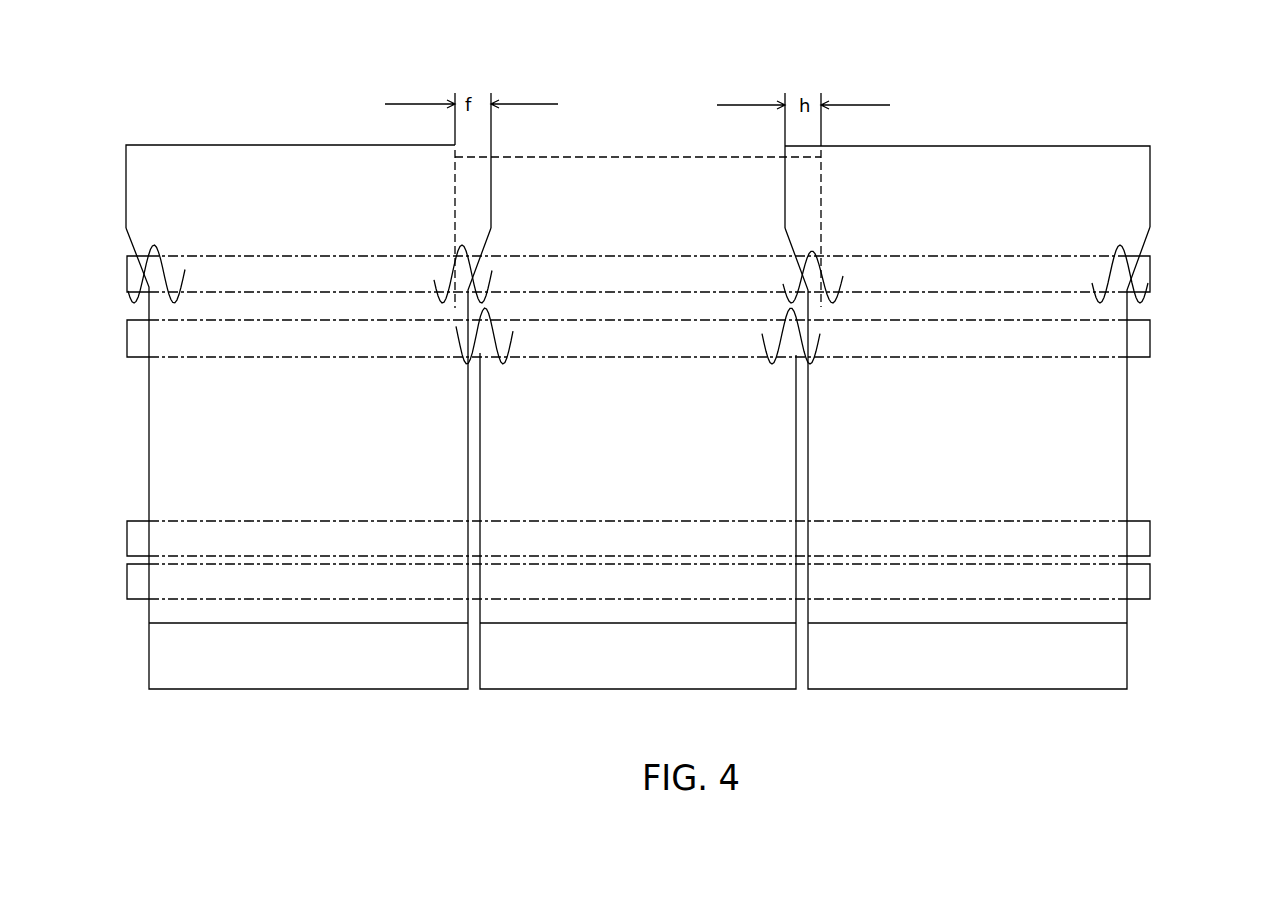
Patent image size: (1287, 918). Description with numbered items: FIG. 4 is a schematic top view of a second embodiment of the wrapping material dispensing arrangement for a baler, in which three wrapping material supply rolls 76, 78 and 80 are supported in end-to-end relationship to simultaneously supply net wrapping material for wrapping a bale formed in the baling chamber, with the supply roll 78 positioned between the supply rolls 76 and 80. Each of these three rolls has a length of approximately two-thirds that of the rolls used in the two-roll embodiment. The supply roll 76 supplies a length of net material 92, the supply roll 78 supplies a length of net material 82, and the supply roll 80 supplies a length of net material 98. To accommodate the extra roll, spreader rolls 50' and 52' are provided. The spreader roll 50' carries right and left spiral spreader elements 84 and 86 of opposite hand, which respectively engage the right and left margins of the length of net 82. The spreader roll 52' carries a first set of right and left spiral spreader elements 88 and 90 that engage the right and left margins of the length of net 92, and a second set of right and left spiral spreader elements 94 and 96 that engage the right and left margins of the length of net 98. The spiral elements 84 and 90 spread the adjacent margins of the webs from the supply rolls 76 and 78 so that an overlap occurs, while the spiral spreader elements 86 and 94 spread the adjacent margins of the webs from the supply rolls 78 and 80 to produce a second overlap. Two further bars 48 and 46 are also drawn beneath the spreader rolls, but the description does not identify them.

The length of net material 98 is at (224, 145).
The length of net material 82 is at (595, 157).
The length of net material 92 is at (934, 146).
The left spiral spreader element 96 is at (158, 248).
The right spiral spreader element 94 is at (468, 247).
The left spiral spreader element 90 is at (806, 252).
The right spiral spreader element 88 is at (1122, 246).
The left spiral spreader element 86 is at (512, 362).
The right spiral spreader element 84 is at (767, 357).
The spreader roll 52' is at (684, 265).
The spreader roll 50' is at (684, 329).
The first bottom conductor bar 48 is at (1152, 540).
The second bottom conductor bar 46 is at (1152, 573).
The wrapping material supply roll 80 is at (210, 690).
The wrapping material supply roll 78 is at (527, 690).
The wrapping material supply roll 76 is at (967, 690).